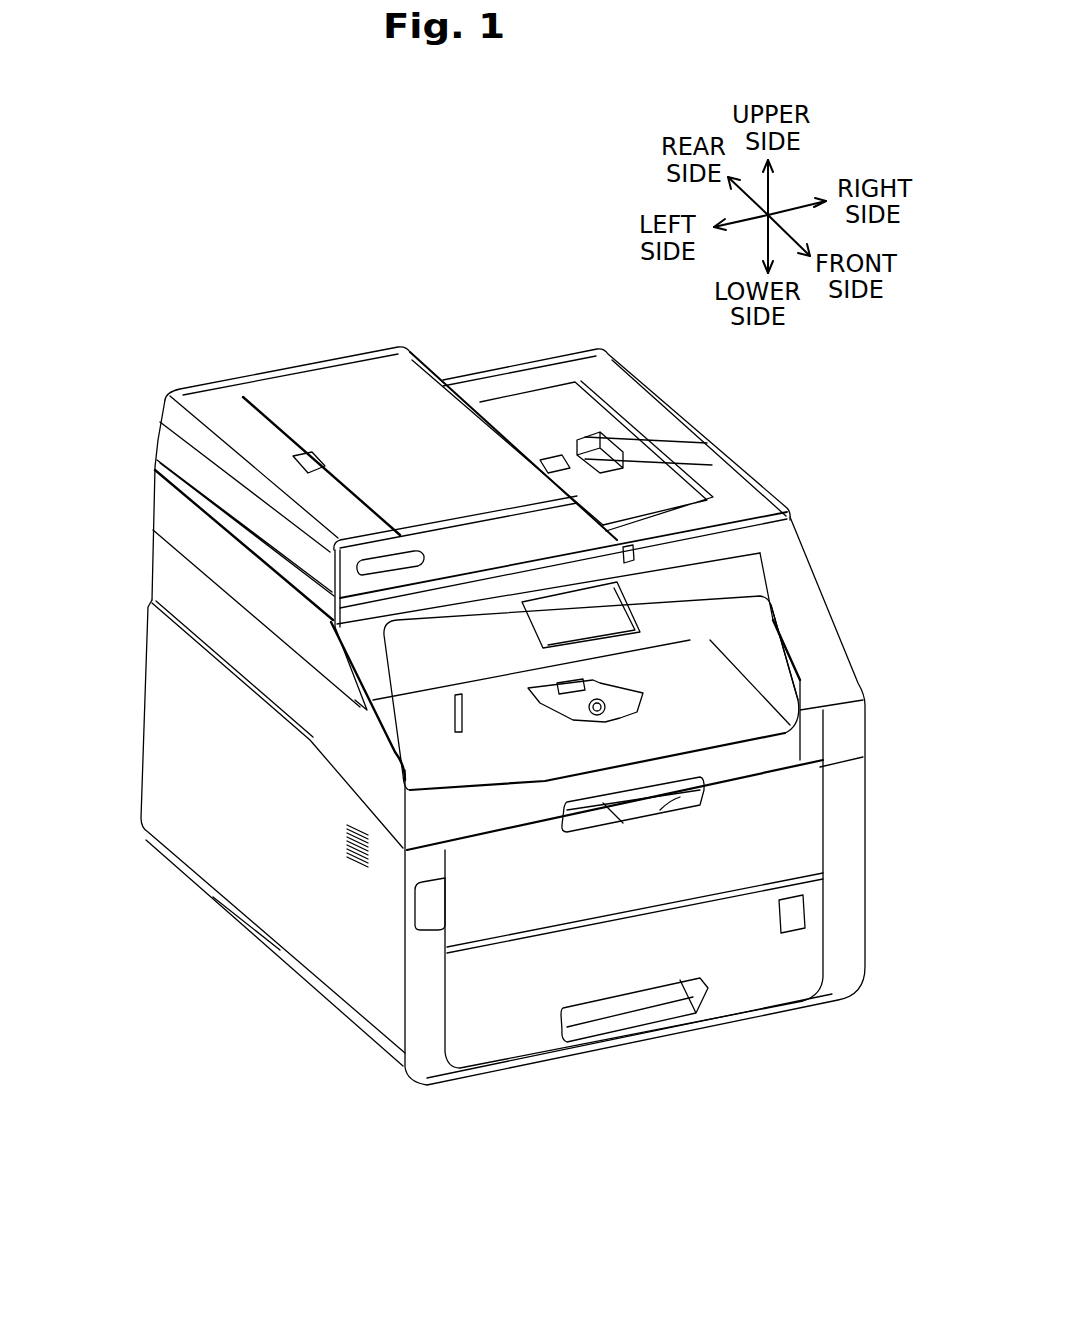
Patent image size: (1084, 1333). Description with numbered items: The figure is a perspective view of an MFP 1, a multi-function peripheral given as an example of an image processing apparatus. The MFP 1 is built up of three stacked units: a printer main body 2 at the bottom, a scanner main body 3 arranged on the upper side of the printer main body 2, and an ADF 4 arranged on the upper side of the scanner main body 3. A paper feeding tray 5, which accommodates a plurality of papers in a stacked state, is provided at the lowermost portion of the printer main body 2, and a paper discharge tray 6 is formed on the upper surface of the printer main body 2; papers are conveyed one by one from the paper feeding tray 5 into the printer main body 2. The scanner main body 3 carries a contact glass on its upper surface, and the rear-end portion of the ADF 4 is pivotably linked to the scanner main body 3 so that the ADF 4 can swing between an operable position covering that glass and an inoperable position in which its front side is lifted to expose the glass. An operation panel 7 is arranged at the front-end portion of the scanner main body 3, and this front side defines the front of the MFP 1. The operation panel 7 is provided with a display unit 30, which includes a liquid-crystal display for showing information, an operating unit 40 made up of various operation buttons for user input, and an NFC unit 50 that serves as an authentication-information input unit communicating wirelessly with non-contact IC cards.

The MFP 1 is at (513, 1132).
The printer main body 2 is at (270, 907).
The scanner main body 3 is at (165, 507).
The ADF 4 is at (345, 368).
The paper feeding tray 5 is at (768, 985).
The paper discharge tray 6 is at (748, 725).
The operation panel 7 is at (776, 558).
The display unit 30 is at (578, 620).
The operating unit 40 is at (683, 620).
The NFC unit 50 is at (487, 655).